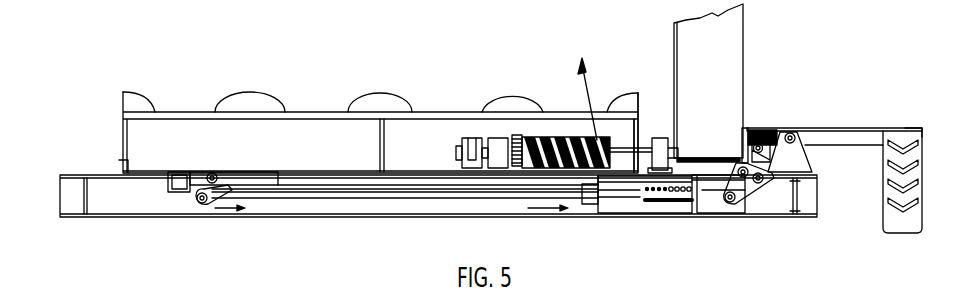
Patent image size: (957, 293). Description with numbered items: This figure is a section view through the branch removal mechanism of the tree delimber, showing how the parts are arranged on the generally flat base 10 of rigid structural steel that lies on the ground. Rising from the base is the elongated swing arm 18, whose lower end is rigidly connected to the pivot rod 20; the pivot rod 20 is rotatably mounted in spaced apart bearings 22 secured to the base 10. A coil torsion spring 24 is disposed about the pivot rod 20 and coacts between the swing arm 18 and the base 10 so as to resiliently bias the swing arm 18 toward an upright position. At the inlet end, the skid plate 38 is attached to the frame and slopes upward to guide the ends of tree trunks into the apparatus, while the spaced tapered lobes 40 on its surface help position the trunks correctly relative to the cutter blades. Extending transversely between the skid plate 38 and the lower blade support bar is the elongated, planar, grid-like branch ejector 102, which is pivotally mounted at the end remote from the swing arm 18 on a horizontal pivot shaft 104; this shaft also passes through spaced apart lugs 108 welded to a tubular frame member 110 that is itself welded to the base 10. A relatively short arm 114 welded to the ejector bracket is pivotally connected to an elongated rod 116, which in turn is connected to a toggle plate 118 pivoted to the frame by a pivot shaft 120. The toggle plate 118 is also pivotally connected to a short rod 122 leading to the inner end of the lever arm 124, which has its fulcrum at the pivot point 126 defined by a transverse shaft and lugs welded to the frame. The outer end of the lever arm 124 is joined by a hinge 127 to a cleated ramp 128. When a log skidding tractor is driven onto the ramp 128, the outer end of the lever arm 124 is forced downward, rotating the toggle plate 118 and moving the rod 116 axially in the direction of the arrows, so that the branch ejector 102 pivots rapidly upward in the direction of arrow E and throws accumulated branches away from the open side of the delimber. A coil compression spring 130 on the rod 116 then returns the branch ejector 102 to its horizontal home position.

The base 10 is at (84, 176).
The swing arm 18 is at (744, 76).
The pivot rod 20 is at (643, 147).
The bearings 22 is at (660, 138).
The coil torsion spring 24 is at (556, 135).
The skid plate 38 is at (297, 114).
The tapered lobes 40 is at (263, 106).
The branch ejector 102 is at (320, 172).
The pivot shaft 104 is at (215, 175).
The lugs 108 is at (199, 175).
The tubular frame member 110 is at (170, 172).
The arm 114 is at (213, 201).
The rod 116 is at (505, 197).
The toggle plate 118 is at (743, 183).
The pivot shaft 120 is at (742, 162).
The short rod 122 is at (764, 157).
The lever arm 124 is at (820, 128).
The pivot point 126 is at (790, 133).
The hinge 127 is at (917, 129).
The ramp 128 is at (883, 197).
The coil compression spring 130 is at (660, 202).
The arrow E is at (589, 87).